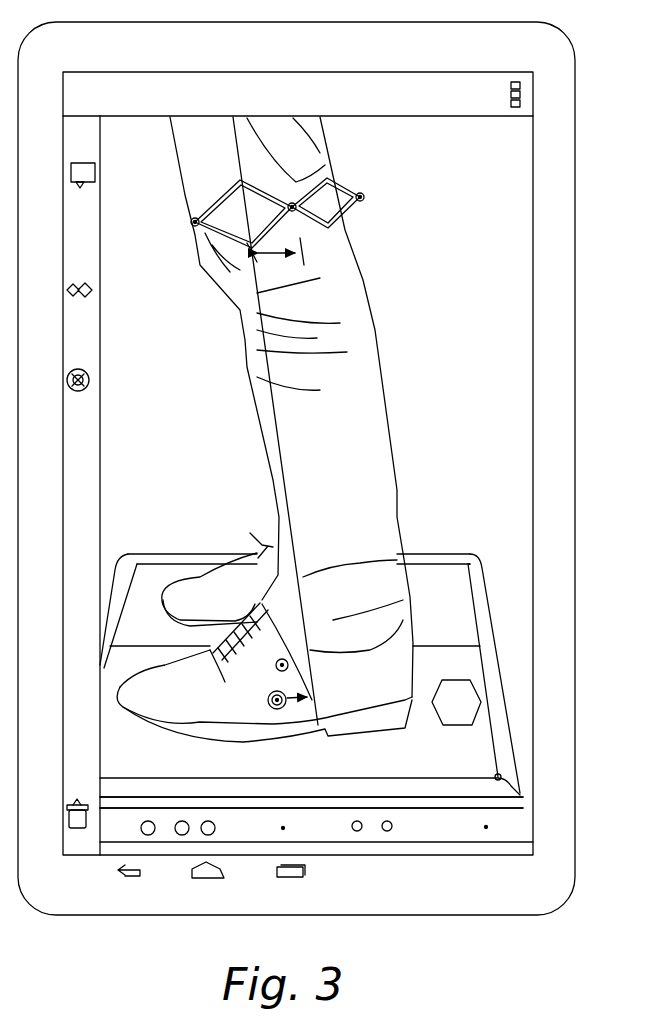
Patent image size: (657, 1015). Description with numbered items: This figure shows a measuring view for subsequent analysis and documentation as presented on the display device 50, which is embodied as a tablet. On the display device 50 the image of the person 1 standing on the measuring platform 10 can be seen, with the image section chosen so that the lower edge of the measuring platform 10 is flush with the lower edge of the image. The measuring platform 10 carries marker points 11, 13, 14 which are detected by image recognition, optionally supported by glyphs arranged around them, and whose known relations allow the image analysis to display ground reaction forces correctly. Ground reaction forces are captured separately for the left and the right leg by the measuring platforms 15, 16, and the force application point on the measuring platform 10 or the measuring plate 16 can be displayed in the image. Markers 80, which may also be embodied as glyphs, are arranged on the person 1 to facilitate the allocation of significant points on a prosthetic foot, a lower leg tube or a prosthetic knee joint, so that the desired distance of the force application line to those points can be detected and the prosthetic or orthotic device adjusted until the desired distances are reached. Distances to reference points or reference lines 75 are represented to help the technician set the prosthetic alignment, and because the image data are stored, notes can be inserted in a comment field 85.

The person 1 is at (392, 317).
The measuring platform 10 is at (370, 617).
The marker point 11 is at (517, 787).
The marker point 13 is at (137, 557).
The marker point 14 is at (473, 550).
The measuring platform 15 is at (435, 580).
The measuring plate 16 is at (483, 757).
The display device 50 is at (590, 440).
The reference line 75 is at (304, 242).
The markers 80 is at (189, 219).
The comment field 85 is at (467, 695).